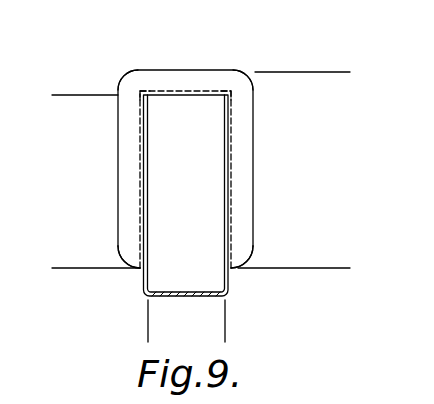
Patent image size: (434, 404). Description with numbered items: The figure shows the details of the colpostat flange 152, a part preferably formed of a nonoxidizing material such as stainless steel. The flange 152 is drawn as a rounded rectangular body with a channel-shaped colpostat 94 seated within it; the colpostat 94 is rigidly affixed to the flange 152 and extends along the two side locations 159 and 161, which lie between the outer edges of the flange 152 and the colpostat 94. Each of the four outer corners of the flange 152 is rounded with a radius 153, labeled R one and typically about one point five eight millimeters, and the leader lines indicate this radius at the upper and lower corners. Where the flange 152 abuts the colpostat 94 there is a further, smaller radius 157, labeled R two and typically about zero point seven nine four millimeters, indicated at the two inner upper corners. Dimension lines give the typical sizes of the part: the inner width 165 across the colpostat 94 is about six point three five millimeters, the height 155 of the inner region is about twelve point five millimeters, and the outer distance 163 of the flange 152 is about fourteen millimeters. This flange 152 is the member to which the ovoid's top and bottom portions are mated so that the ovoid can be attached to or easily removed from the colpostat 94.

The colpostat flange 152 is at (274, 89).
The radius R1 153 is at (134, 80).
The height 155 is at (63, 95).
The radius R2 157 is at (150, 100).
The location 159 is at (140, 143).
The location 161 is at (246, 144).
The outer distance 163 is at (346, 72).
The inner width 165 is at (225, 330).
The colpostat 94 is at (197, 207).